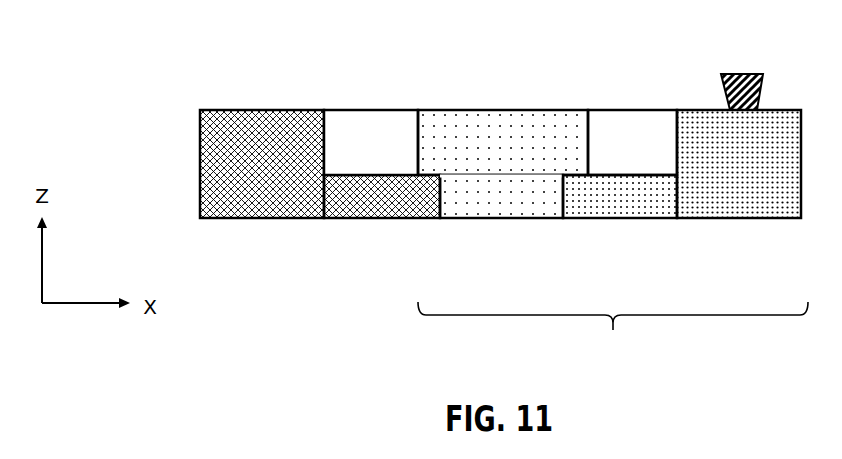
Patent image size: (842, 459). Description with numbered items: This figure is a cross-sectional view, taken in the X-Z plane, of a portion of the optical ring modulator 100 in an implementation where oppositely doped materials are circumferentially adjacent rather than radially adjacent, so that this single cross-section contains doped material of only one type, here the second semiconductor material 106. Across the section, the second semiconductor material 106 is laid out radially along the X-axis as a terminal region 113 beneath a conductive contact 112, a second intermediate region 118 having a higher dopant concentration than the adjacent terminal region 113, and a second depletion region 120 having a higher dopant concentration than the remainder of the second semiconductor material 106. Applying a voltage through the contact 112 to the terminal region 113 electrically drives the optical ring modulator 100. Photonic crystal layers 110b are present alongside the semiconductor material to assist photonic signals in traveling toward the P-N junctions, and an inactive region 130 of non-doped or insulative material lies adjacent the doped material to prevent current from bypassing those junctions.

The optical ring modulator 100 is at (228, 68).
The second semiconductor material 106 is at (613, 335).
The photonic crystal layer 110b is at (350, 110).
The conductive contact 112 is at (763, 73).
The terminal region 113 is at (787, 191).
The second intermediate region 118 is at (640, 193).
The second depletion region 120 is at (537, 195).
The inactive region 130 is at (220, 200).